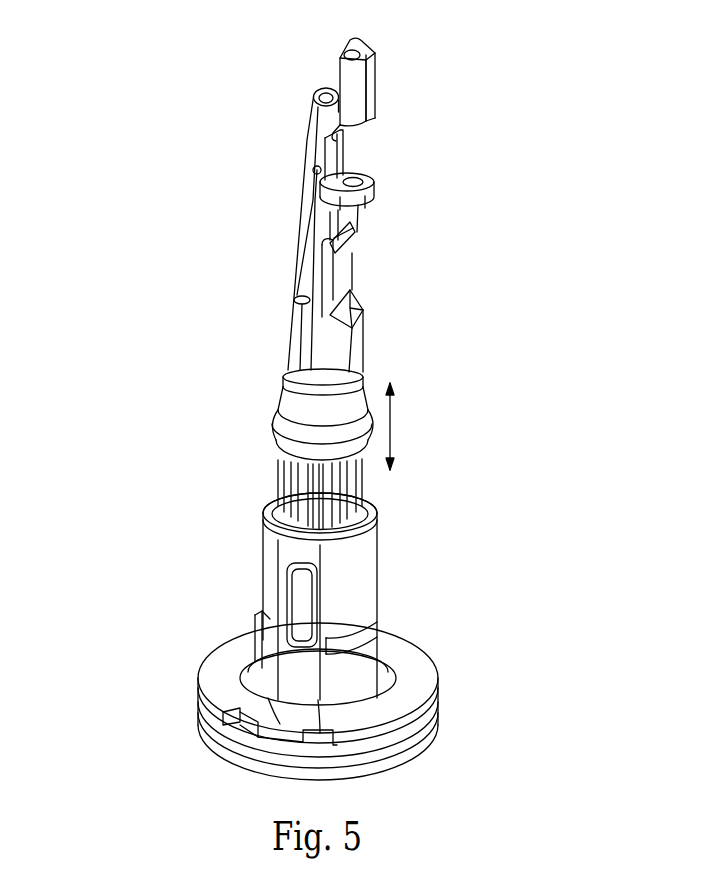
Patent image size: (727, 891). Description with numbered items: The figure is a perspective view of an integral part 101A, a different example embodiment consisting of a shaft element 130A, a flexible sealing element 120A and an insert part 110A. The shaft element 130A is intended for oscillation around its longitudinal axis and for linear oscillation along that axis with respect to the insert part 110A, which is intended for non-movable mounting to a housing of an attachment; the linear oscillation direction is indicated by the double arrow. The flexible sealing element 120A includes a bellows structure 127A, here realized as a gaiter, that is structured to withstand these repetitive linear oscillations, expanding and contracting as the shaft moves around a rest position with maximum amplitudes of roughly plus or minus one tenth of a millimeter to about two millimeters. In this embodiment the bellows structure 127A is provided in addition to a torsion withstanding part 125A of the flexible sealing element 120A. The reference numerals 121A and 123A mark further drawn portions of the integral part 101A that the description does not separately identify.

The integral part 101A is at (146, 193).
The insert part 110A is at (390, 607).
The flexible sealing element 120A is at (440, 432).
The housing rim 121A is at (377, 513).
The collar 123A is at (368, 380).
The torsion withstanding part 125A is at (258, 484).
The bellows structure 127A is at (278, 424).
The shaft element 130A is at (380, 186).